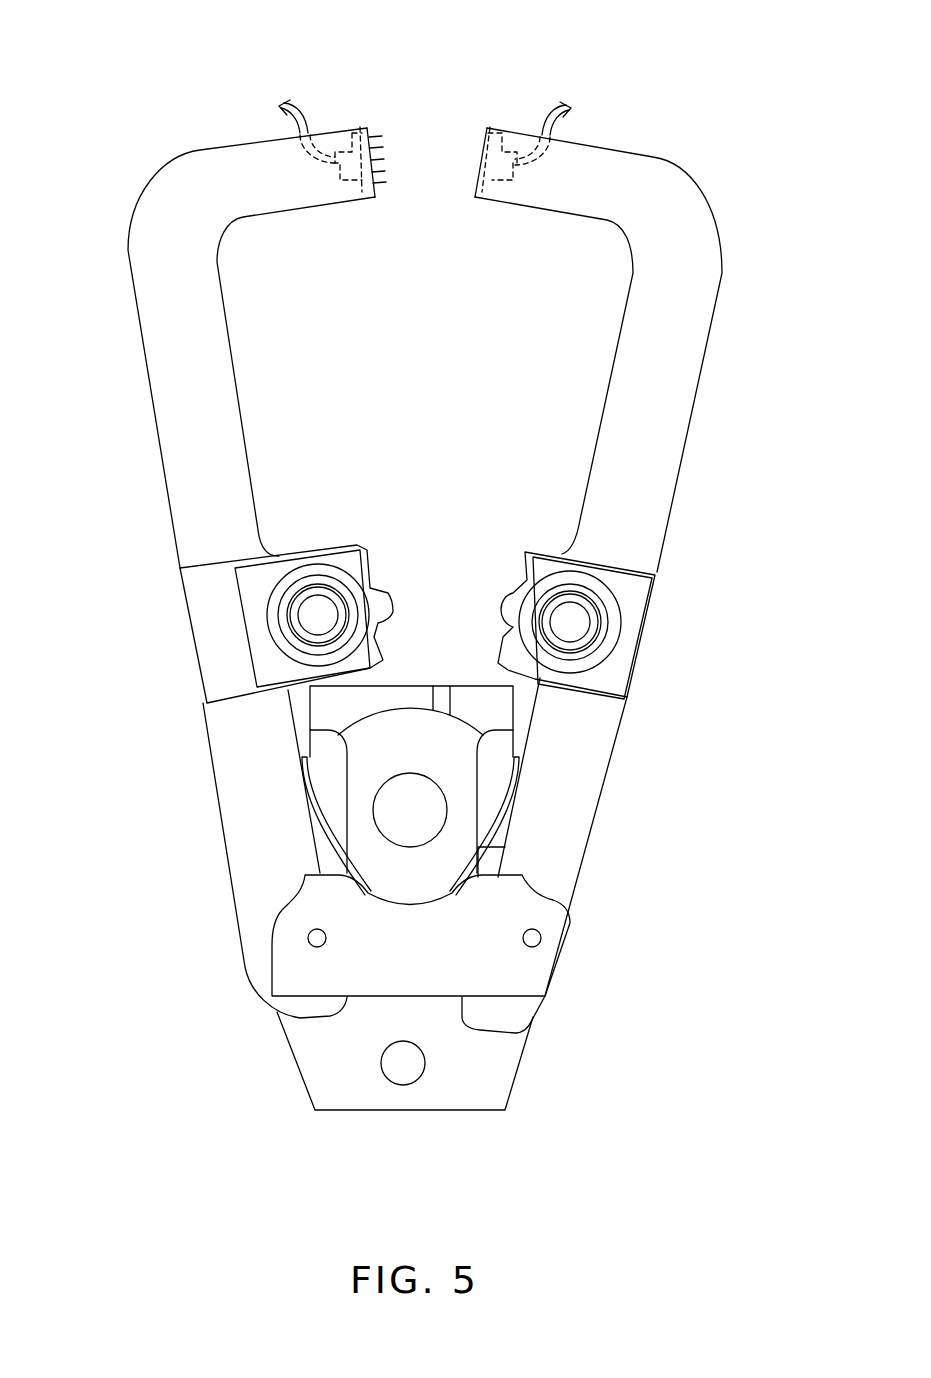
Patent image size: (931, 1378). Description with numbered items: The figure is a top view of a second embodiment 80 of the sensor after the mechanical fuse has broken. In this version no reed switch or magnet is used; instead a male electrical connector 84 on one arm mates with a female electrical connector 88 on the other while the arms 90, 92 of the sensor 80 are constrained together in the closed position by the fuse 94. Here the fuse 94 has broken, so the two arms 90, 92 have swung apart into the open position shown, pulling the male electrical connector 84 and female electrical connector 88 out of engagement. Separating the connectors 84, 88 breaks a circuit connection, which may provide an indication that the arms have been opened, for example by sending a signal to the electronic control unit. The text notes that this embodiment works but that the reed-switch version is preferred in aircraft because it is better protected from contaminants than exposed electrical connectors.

The second embodiment of the sensor 80 is at (538, 88).
The male electrical connector 84 is at (360, 127).
The female electrical connector 88 is at (492, 160).
The arm 90 is at (157, 437).
The arm 92 is at (700, 364).
The fuse 94 is at (496, 597).